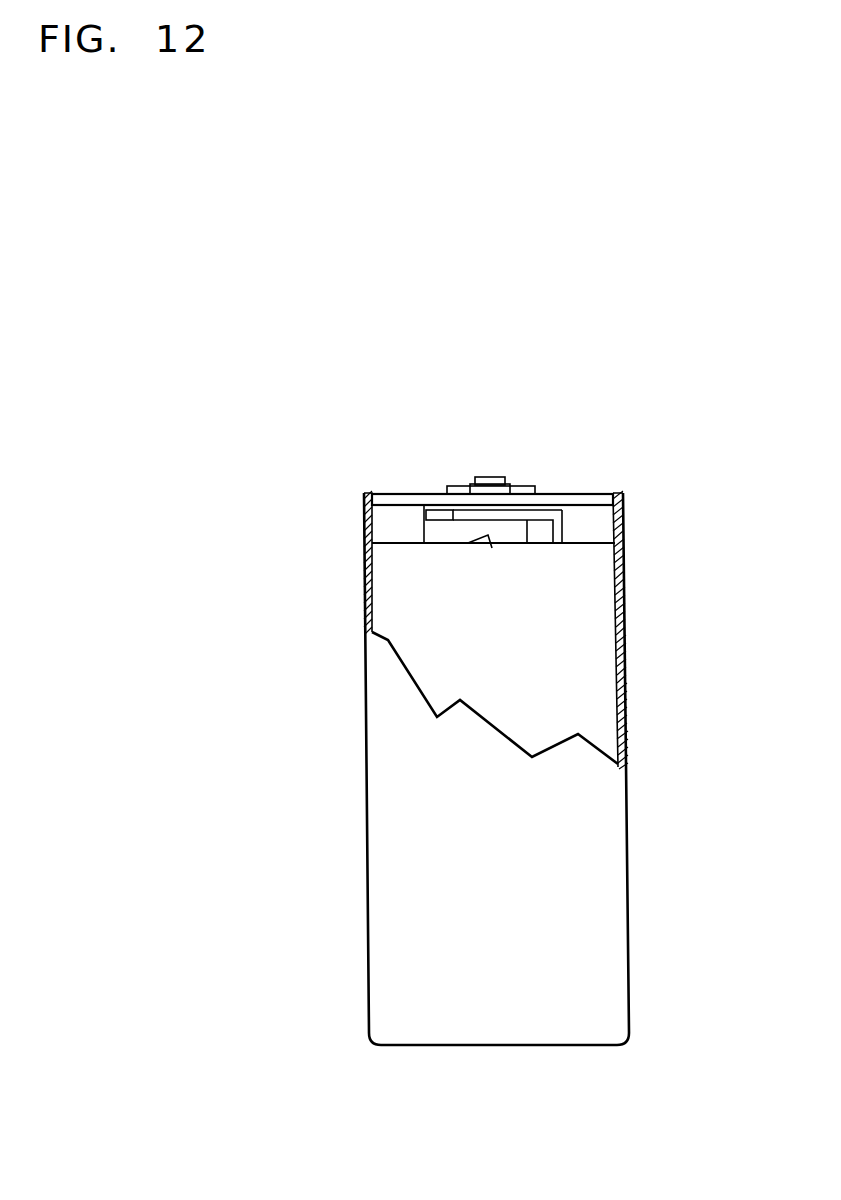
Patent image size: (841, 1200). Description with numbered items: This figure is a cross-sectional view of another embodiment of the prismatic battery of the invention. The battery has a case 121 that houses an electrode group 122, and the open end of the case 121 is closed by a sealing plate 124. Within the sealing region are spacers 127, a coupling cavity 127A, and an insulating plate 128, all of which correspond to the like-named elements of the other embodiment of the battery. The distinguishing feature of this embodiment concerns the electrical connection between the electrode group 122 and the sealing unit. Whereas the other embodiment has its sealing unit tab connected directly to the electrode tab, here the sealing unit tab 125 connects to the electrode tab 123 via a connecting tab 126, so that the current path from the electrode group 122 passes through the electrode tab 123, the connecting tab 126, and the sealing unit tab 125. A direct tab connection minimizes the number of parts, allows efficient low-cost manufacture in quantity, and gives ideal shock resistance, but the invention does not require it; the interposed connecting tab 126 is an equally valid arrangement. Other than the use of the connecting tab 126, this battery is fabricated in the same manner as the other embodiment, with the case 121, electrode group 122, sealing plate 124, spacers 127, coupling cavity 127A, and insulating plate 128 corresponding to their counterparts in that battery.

The case 121 is at (625, 668).
The electrode group 122 is at (560, 679).
The electrode tab 123 is at (543, 540).
The sealing plate 124 is at (582, 498).
The sealing unit tab 125 is at (430, 513).
The connecting tab 126 is at (465, 522).
The spacers 127 is at (595, 532).
The coupling cavity 127A is at (488, 535).
The insulating plate 128 is at (440, 510).